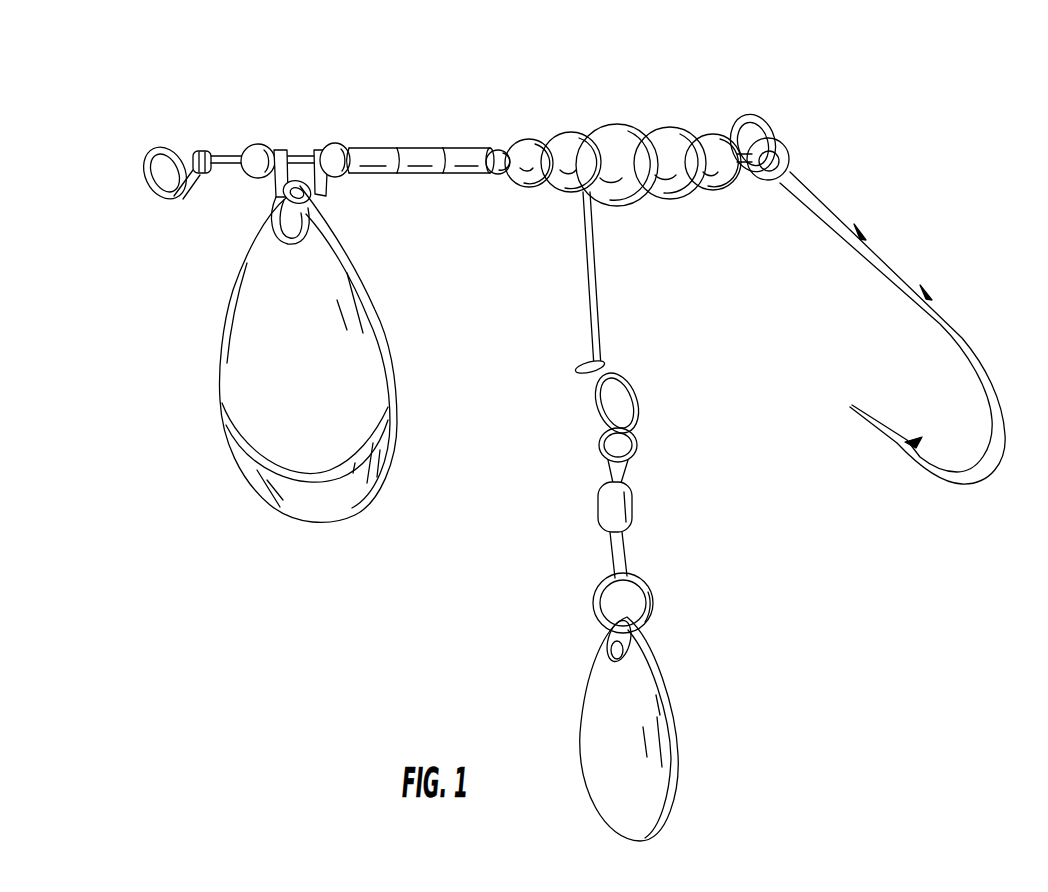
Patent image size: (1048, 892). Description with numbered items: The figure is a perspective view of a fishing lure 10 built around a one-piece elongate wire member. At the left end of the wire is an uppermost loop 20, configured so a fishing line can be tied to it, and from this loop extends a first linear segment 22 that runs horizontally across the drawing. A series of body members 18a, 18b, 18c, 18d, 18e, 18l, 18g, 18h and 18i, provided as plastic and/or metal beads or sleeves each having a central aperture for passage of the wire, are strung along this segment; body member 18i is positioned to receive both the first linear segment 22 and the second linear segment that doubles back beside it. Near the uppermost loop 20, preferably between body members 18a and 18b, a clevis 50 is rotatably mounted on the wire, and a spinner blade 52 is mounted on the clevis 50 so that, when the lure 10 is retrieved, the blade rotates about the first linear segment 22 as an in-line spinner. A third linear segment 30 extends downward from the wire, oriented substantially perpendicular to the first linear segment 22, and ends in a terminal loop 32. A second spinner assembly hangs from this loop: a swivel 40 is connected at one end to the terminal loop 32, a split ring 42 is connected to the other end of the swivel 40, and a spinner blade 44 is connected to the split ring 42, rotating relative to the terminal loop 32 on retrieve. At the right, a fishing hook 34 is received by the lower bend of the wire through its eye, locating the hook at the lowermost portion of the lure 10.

The fishing lure 10 is at (274, 102).
The body member 18a is at (248, 173).
The body member 18b is at (338, 146).
The body member 18c is at (374, 148).
The body member 18d is at (418, 148).
The body member 18e is at (460, 148).
The body member 18l is at (498, 148).
The body member 18g is at (530, 139).
The body member 18h is at (571, 132).
The body member 18i is at (667, 126).
The uppermost loop 20 is at (157, 197).
The first linear segment 22 is at (296, 148).
The third linear segment 30 is at (600, 298).
The terminal loop 32 is at (641, 405).
The fishing hook 34 is at (880, 270).
The swivel 40 is at (633, 505).
The split ring 42 is at (655, 602).
The spinner blade 44 is at (675, 732).
The clevis 50 is at (318, 187).
The spinner blade 52 is at (362, 376).